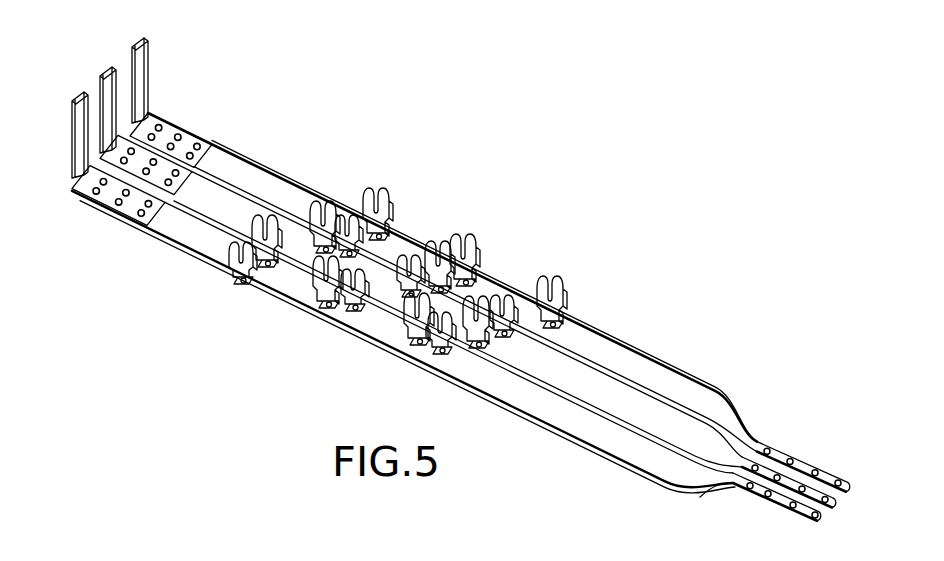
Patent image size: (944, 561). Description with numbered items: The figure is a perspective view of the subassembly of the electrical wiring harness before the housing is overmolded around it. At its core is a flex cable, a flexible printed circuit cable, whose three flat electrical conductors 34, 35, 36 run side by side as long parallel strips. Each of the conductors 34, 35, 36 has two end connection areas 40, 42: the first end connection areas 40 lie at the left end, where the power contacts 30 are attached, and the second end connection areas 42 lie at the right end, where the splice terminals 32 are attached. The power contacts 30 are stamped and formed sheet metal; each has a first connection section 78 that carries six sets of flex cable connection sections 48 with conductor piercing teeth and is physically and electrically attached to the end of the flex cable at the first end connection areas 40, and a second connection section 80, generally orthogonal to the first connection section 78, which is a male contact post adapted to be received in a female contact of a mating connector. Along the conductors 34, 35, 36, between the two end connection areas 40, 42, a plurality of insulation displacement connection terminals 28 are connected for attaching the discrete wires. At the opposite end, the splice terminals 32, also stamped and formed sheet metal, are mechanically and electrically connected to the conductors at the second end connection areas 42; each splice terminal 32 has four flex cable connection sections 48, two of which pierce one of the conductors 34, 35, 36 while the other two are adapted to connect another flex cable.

The insulation displacement connection (IDC) terminal 28 is at (370, 193).
The power contact 30 is at (140, 40).
The splice terminal 32 is at (809, 474).
The flat electrical conductor 34 is at (600, 353).
The flat electrical conductor 35 is at (637, 403).
The flat electrical conductor 36 is at (595, 437).
The first end connection area 40 is at (107, 200).
The second end connection area 42 is at (740, 490).
The flex cable connection section 48 is at (778, 441).
The first connection section 78 is at (190, 137).
The second connection section 80 is at (147, 73).